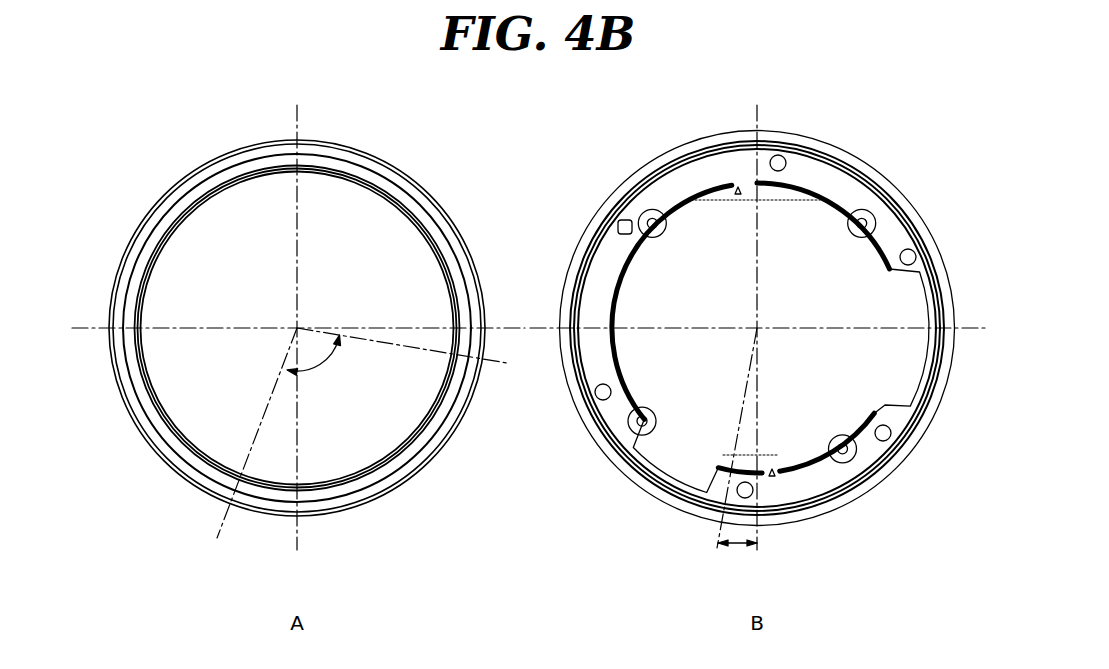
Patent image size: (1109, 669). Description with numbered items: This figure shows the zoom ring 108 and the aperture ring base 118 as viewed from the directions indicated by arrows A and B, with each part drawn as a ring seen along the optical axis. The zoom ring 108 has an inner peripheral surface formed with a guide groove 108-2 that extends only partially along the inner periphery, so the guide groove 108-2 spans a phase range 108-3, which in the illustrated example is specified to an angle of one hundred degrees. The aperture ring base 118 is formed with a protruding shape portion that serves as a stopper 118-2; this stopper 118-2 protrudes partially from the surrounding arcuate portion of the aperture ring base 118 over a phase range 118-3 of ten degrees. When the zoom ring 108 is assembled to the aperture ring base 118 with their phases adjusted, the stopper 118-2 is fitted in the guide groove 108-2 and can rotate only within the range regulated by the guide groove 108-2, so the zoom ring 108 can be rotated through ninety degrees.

The zoom ring 108 is at (298, 327).
The guide groove 108-2 is at (348, 493).
The phase range 108-3 is at (323, 360).
The aperture ring base 118 is at (757, 354).
The stopper 118-2 is at (744, 508).
The phase range 118-3 is at (740, 548).